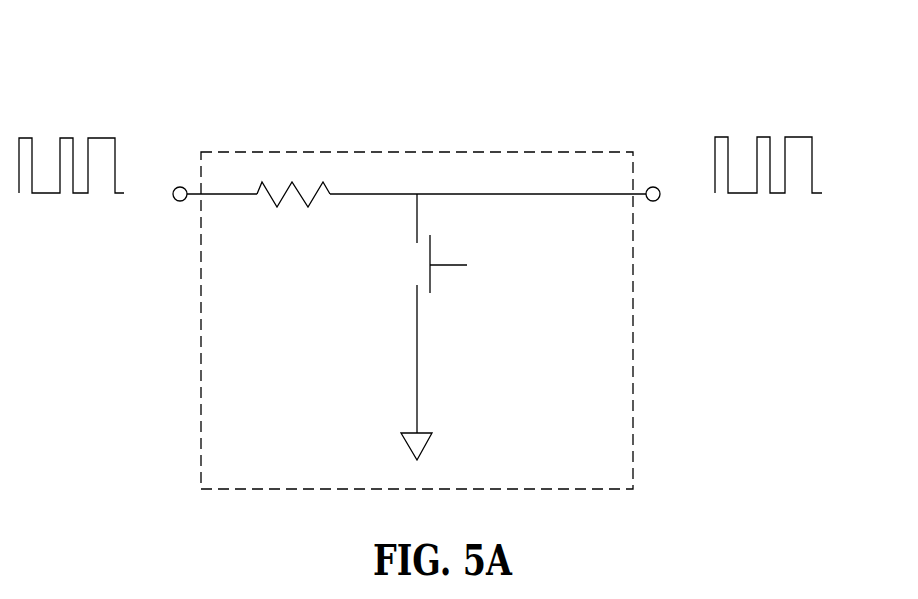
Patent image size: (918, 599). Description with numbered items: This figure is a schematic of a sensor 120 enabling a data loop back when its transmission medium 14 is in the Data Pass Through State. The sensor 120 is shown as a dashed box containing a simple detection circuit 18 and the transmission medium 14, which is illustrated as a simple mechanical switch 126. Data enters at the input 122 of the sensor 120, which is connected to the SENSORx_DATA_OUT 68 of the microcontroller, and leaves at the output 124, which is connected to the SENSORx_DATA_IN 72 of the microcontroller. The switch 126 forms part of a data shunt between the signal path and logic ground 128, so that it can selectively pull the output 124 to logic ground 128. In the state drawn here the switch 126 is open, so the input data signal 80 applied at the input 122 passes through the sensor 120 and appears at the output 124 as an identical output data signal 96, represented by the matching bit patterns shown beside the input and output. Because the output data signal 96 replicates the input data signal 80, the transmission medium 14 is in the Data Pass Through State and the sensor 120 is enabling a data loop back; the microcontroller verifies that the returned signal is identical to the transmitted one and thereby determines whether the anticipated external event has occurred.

The SENSORx_DATA_OUT 68 is at (70, 85).
The input data signal 80 is at (83, 194).
The SENSORx_DATA_IN 72 is at (778, 97).
The output data signal 96 is at (778, 194).
The input 122 is at (180, 170).
The output 124 is at (654, 175).
The sensor 120 is at (333, 150).
The detection circuit 18 is at (299, 218).
The switch 126 is at (432, 247).
The transmission medium 14 is at (479, 250).
The logic ground 128 is at (417, 397).